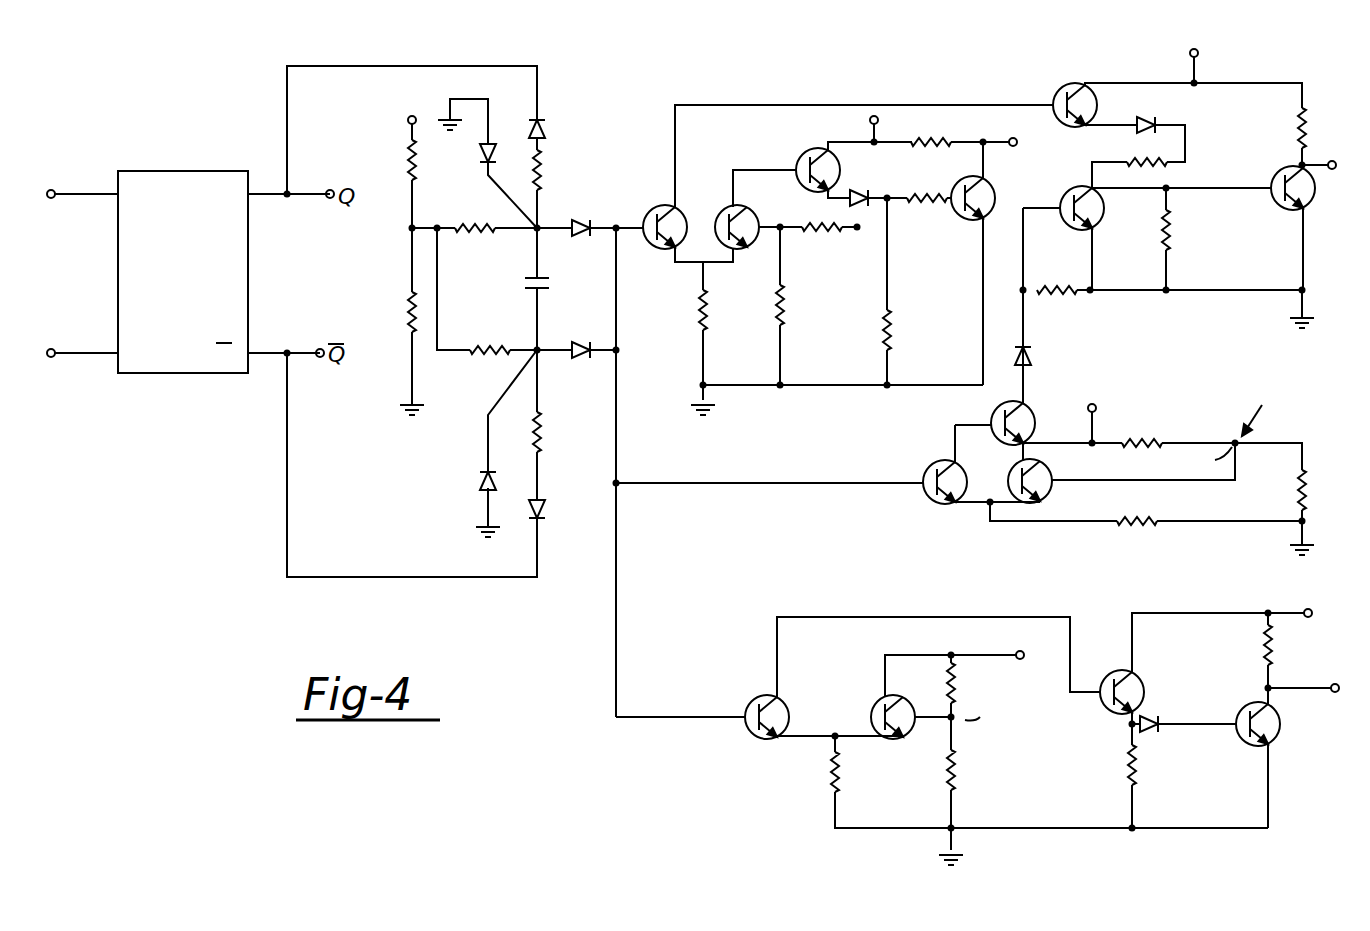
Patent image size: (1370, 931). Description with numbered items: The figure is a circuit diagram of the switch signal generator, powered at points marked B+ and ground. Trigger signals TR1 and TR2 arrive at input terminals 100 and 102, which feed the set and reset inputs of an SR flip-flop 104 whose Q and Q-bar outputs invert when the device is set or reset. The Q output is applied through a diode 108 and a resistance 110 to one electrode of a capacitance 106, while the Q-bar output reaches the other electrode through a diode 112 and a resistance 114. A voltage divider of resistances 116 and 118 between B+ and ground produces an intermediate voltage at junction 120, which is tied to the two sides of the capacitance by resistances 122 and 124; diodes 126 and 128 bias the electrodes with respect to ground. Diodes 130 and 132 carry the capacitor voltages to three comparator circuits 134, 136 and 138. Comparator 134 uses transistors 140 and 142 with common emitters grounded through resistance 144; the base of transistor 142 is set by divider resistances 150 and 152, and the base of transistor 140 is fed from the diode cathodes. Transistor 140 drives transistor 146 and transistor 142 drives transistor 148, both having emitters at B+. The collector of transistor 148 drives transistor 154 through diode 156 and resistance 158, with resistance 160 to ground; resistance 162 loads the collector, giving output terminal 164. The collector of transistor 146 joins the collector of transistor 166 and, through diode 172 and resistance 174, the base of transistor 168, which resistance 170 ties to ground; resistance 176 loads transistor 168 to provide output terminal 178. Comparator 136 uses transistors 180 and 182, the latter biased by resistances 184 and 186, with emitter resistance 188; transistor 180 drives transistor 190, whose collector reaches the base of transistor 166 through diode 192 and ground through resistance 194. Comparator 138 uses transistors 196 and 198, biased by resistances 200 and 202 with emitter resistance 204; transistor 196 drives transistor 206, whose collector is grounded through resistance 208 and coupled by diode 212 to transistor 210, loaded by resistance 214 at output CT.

The input terminal 100 is at (50, 200).
The input terminal 102 is at (50, 358).
The SR flip-flop 104 is at (214, 152).
The capacitance 106 is at (528, 290).
The diode 108 is at (546, 130).
The resistance 110 is at (545, 165).
The diode 112 is at (546, 507).
The resistance 114 is at (542, 436).
The resistance 116 is at (410, 166).
The resistance 118 is at (408, 318).
The junction 120 is at (408, 232).
The resistance 122 is at (490, 236).
The resistance 124 is at (500, 362).
The diode 126 is at (478, 158).
The diode 128 is at (482, 484).
The diode 130 is at (590, 220).
The diode 132 is at (580, 358).
The comparator circuit 134 is at (740, 158).
The comparator circuit 136 is at (1008, 480).
The comparator circuit 138 is at (848, 679).
The transistor 140 is at (656, 250).
The transistor 142 is at (722, 210).
The resistance 144 is at (695, 318).
The transistor 146 is at (1065, 90).
The transistor 148 is at (806, 150).
The resistance 150 is at (835, 232).
The resistance 152 is at (790, 302).
The transistor 154 is at (970, 218).
The diode 156 is at (852, 192).
The resistance 158 is at (936, 182).
The resistance 160 is at (898, 332).
The resistance 162 is at (946, 122).
The output terminal 164 is at (1013, 150).
The transistor 166 is at (1064, 196).
The transistor 168 is at (1285, 168).
The resistance 170 is at (1172, 232).
The diode 172 is at (1158, 120).
The resistance 174 is at (1142, 158).
The resistance 176 is at (1305, 128).
The output terminal 178 is at (1336, 170).
The transistor 180 is at (925, 470).
The transistor 182 is at (1053, 470).
The resistance 184 is at (1160, 410).
The resistance 186 is at (1320, 483).
The resistance 188 is at (1132, 530).
The transistor 190 is at (1058, 400).
The diode 192 is at (1033, 357).
The resistance 194 is at (1078, 266).
The transistor 196 is at (750, 700).
The transistor 198 is at (872, 713).
The resistance 200 is at (958, 685).
The resistance 202 is at (960, 775).
The resistance 204 is at (826, 778).
The transistor 206 is at (1110, 678).
The resistance 208 is at (1122, 768).
The transistor 210 is at (1283, 724).
The diode 212 is at (1155, 715).
The resistance 214 is at (1280, 645).